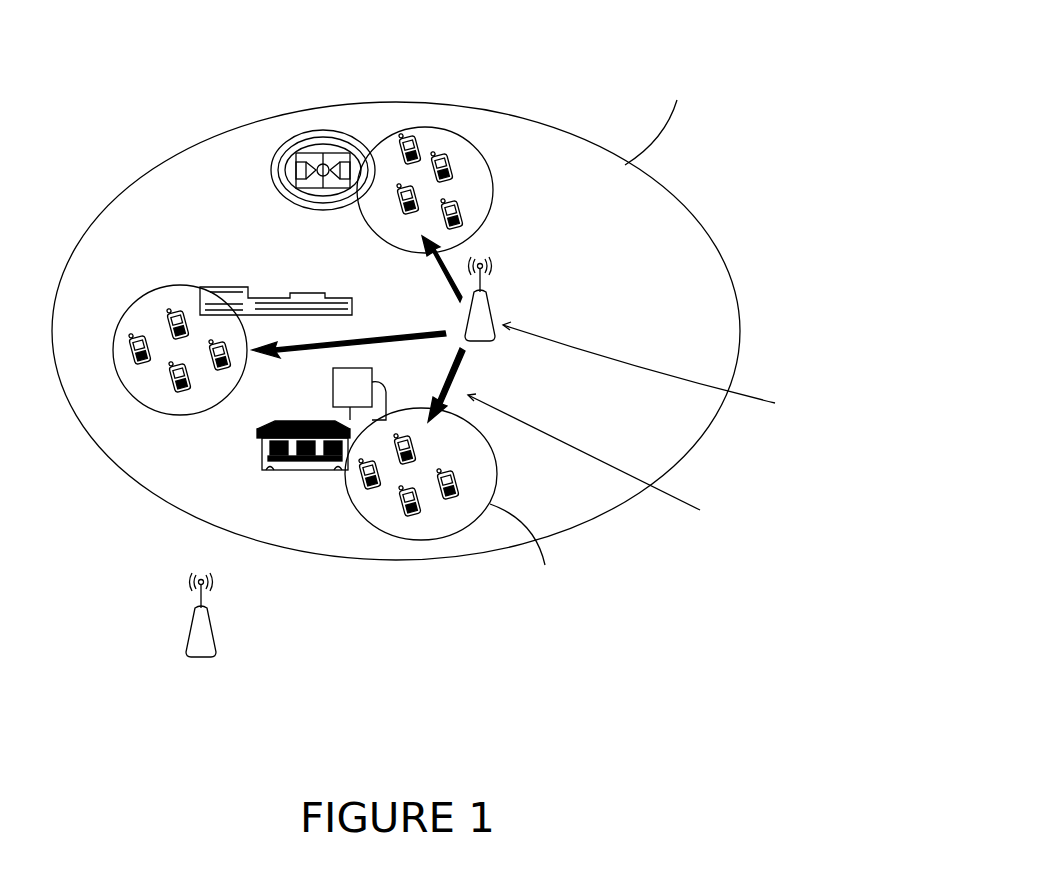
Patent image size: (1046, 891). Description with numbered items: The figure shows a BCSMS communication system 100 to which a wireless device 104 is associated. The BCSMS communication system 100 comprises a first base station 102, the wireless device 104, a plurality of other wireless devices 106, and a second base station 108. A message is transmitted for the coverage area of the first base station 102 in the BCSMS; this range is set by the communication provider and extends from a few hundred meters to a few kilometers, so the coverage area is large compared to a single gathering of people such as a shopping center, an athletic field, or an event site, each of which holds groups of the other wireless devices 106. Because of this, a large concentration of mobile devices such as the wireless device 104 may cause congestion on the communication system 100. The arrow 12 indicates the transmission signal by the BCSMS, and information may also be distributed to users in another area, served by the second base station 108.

The BCSMS communication system 100 is at (404, 62).
The first base station 102 is at (500, 297).
The wireless device 104 is at (358, 475).
The plurality of other wireless devices 106 is at (487, 165).
The second base station 108 is at (212, 648).
The arrow 12 is at (436, 262).